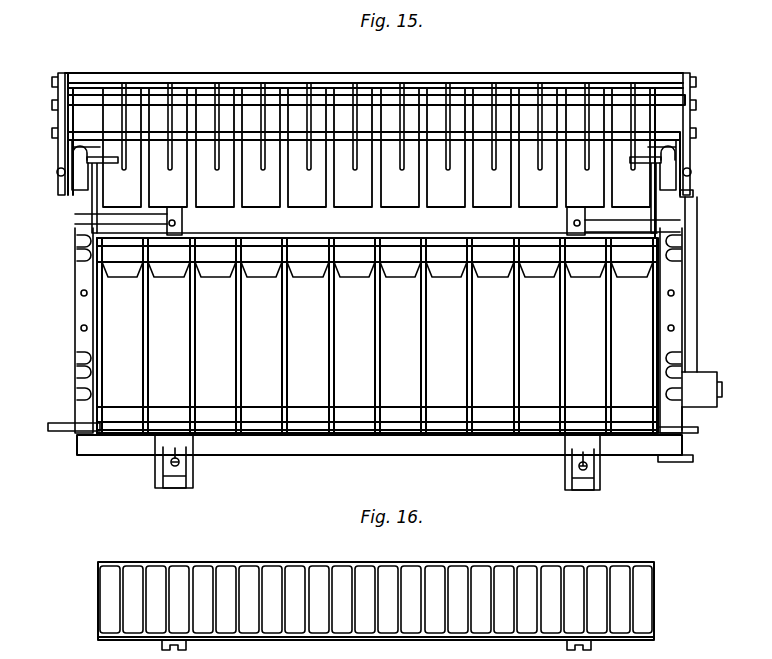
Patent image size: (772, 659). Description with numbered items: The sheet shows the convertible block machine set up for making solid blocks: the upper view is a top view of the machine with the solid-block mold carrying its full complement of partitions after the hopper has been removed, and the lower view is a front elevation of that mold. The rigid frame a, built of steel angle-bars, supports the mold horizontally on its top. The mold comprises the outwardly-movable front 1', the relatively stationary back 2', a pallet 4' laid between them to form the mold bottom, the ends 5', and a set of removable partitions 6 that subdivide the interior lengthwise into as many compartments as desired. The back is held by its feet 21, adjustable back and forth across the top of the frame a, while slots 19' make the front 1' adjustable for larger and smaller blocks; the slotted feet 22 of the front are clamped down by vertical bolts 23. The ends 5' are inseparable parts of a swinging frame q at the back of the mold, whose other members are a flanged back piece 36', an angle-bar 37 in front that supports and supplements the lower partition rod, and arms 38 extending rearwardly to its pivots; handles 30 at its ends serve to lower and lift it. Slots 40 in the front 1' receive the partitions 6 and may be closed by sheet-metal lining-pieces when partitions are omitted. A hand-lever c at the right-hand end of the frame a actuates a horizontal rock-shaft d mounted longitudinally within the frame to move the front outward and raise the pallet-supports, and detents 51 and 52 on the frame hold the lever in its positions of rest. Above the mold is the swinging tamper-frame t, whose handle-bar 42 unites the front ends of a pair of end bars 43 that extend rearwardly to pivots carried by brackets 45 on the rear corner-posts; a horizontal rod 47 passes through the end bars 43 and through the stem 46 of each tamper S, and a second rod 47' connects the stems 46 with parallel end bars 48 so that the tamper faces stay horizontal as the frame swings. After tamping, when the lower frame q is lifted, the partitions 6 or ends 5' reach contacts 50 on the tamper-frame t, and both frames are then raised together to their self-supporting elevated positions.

In FIG. 15, the tamper-frame t is at (428, 82).
In FIG. 15, the handle-bar 42 is at (193, 81).
In FIG. 15, the end bars 43 is at (58, 117).
In FIG. 15, the horizontal rod 47 is at (376, 109).
In FIG. 15, the rod 47' is at (374, 124).
In FIG. 15, the tamper stem 46 is at (262, 121).
In FIG. 15, the tampers S is at (446, 190).
In FIG. 15, the end bars 48 is at (70, 154).
In FIG. 15, the brackets 45 is at (72, 165).
In FIG. 15, the contacts 50 is at (110, 165).
In FIG. 15, the detent 52 is at (697, 194).
In FIG. 15, the arms 38 is at (90, 214).
In FIG. 15, the feet of the mold-back 21 is at (182, 222).
In FIG. 15, the back piece 36' is at (377, 230).
In FIG. 15, the mold-back 2' is at (377, 246).
In FIG. 15, the pallet 4' is at (377, 335).
In FIG. 15, the partitions 6 is at (283, 340).
In FIG. 15, the mold ends 5' is at (386, 330).
In FIG. 15, the swinging frame q is at (78, 280).
In FIG. 15, the hand-lever c is at (698, 236).
In FIG. 15, the rock-shaft d is at (722, 394).
In FIG. 15, the handles 30 is at (55, 433).
In FIG. 15, the main frame a is at (92, 456).
In FIG. 15, the detent 51 is at (678, 462).
In FIG. 15, the slotted feet of the mold-front 22 is at (165, 470).
In FIG. 16, the slotted feet of the mold-front 22 is at (381, 649).
In FIG. 15, the vertical bolt 23 is at (180, 463).
In FIG. 15, the slot 19' is at (399, 504).
In FIG. 15, the mold-front 1' is at (377, 467).
In FIG. 16, the mold-front 1' is at (376, 584).
In FIG. 15, the angle-bar 37 is at (358, 436).
In FIG. 16, the slots 40 is at (148, 566).